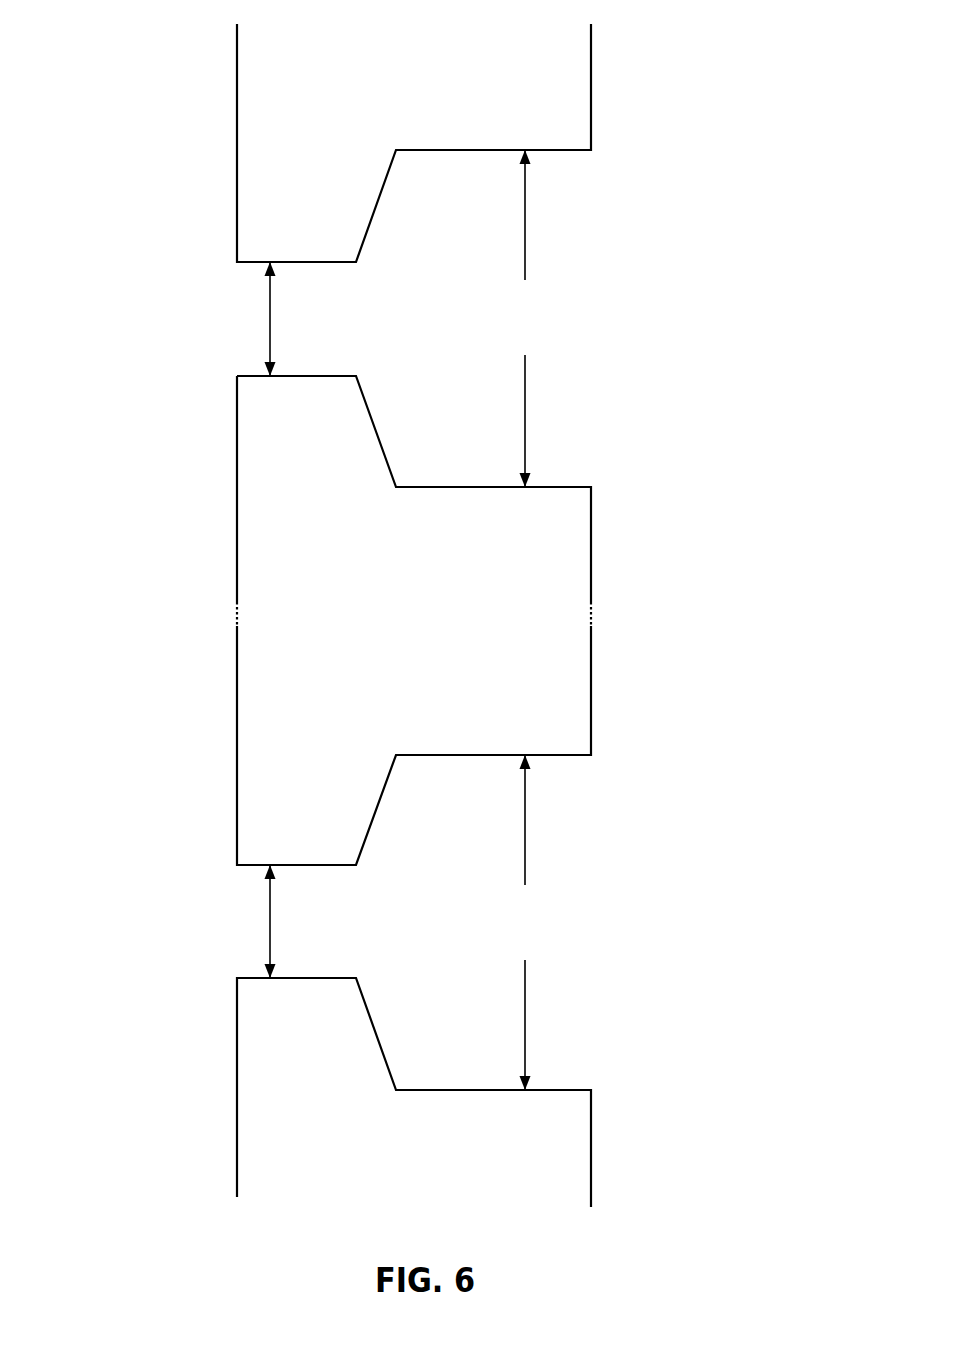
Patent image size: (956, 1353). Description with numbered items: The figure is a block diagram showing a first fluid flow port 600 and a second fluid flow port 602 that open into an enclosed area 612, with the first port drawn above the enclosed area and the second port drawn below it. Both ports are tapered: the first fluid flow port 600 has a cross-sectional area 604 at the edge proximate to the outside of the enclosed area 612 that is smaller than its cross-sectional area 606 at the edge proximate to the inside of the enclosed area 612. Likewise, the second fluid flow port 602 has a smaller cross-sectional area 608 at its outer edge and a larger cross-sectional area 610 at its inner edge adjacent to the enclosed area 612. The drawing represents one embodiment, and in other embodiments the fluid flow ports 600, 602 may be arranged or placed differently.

The first fluid flow port 600 is at (220, 213).
The second fluid flow port 602 is at (220, 842).
The area 604 is at (270, 341).
The area 606 is at (525, 318).
The area 608 is at (270, 947).
The area 610 is at (525, 922).
The enclosed area 612 is at (532, 620).